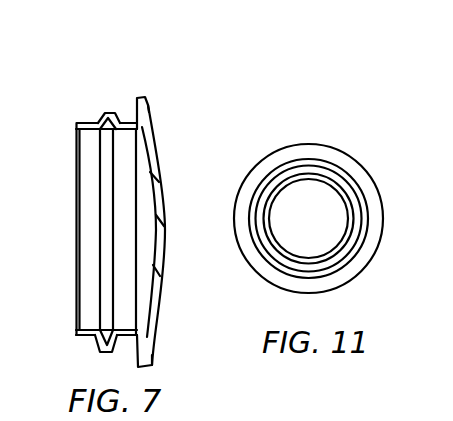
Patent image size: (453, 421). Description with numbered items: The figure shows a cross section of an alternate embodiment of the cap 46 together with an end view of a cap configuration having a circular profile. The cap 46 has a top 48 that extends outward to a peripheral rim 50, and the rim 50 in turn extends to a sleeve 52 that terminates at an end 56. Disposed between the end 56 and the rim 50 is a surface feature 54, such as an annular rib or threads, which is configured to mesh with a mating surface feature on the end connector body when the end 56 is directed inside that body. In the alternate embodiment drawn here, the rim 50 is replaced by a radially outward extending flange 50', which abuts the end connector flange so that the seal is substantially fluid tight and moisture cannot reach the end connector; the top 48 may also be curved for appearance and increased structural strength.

In FIG. 7, the cap 46 is at (163, 187).
In FIG. 7, the top 48 is at (167, 210).
In FIG. 11, the peripheral rim 50 is at (322, 207).
In FIG. 7, the radially outward extending flange 50' is at (179, 208).
In FIG. 7, the sleeve 52 is at (88, 126).
In FIG. 11, the sleeve 52 is at (292, 178).
In FIG. 7, the surface feature 54 is at (105, 114).
In FIG. 11, the surface feature 54 is at (307, 162).
In FIG. 7, the end 56 is at (77, 252).
In FIG. 11, the end 56 is at (327, 233).